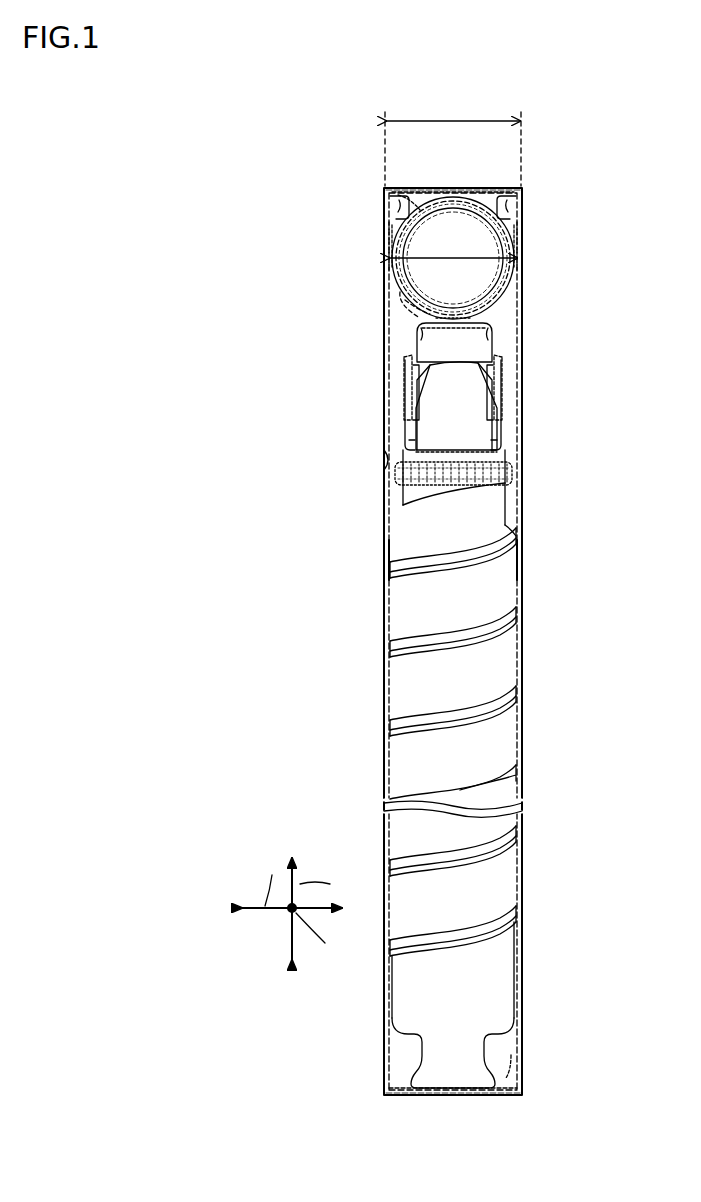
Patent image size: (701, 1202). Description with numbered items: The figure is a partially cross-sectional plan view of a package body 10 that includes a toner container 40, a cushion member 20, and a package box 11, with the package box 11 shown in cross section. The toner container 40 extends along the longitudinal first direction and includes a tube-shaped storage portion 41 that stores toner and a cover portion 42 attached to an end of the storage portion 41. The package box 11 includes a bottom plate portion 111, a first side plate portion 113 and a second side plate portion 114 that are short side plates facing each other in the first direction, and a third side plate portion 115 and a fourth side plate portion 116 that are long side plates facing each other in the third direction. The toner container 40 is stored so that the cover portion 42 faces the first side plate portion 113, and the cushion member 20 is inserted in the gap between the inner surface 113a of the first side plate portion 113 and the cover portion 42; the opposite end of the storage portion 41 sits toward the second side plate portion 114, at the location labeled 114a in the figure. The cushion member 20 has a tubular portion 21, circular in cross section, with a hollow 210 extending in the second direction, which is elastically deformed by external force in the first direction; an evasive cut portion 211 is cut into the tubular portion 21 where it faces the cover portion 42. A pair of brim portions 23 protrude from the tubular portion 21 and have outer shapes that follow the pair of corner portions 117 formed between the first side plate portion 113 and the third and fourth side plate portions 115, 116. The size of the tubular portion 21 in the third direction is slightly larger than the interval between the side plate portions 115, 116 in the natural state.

The package body 10 is at (352, 168).
The package box 11 is at (378, 370).
The cushion member 20 is at (508, 302).
The tubular portion 21 is at (518, 292).
The brim portions 23 is at (388, 224).
The toner container 40 is at (404, 334).
The storage portion 41 is at (522, 666).
The cover portion 42 is at (514, 405).
The bottom plate portion 111 is at (510, 352).
The first side plate portion 113 is at (440, 190).
The inner surface 113a is at (426, 168).
The second side plate portion 114 is at (445, 1100).
The bottom wall opening 114a is at (388, 460).
The third side plate portion 115 is at (522, 556).
The fourth side plate portion 116 is at (384, 556).
The corner portions 117 is at (386, 214).
The hollow 210 is at (460, 212).
The evasive cut portion 211 is at (402, 292).